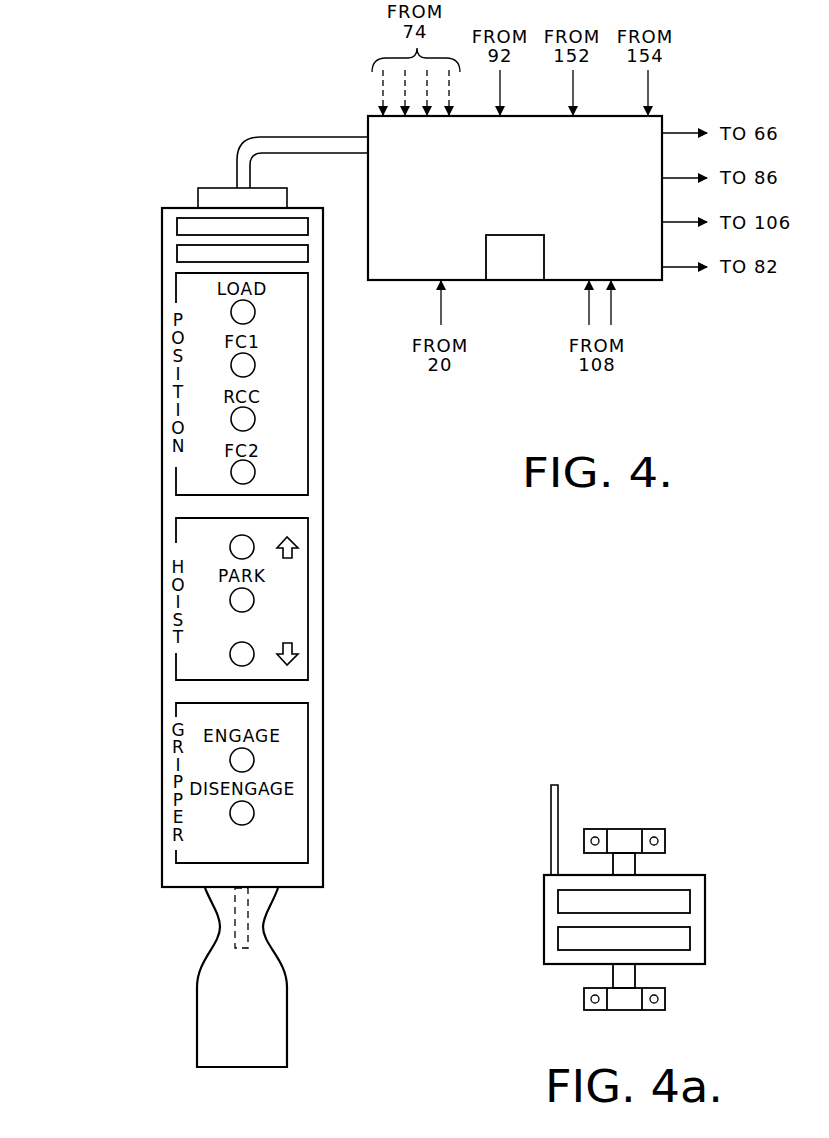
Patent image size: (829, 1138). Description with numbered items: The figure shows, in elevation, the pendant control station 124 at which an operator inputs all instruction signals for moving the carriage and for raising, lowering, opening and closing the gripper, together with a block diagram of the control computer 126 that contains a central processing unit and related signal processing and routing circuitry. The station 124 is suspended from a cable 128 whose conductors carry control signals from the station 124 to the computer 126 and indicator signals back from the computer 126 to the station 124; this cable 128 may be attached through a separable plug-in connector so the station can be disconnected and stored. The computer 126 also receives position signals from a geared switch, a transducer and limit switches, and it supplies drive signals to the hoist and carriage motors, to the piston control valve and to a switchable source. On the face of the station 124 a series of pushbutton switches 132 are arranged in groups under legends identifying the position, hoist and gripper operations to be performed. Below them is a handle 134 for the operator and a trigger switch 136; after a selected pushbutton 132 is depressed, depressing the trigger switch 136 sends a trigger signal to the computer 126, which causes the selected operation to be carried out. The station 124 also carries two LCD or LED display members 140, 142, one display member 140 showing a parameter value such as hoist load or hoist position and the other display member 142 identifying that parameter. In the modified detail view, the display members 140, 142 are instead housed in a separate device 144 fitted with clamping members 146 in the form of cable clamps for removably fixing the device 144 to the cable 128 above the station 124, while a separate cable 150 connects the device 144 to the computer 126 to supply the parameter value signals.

In FIG. 4, the control station 124 is at (323, 420).
In FIG. 4, the control computer 126 is at (535, 182).
In FIG. 4, the cable 128 is at (288, 137).
In FIG. 4, the pushbutton switches 132 is at (239, 310).
In FIG. 4, the handle 134 is at (263, 1000).
In FIG. 4, the trigger switch 136 is at (240, 932).
In FIG. 4, the display member 140 is at (190, 228).
In FIG. 4a, the display member 140 is at (570, 902).
In FIG. 4, the display member 142 is at (190, 253).
In FIG. 4a, the display member 142 is at (570, 938).
In FIG. 4a, the separate device 144 is at (700, 909).
In FIG. 4a, the clamping members 146 is at (658, 838).
In FIG. 4a, the separate cable 150 is at (553, 818).